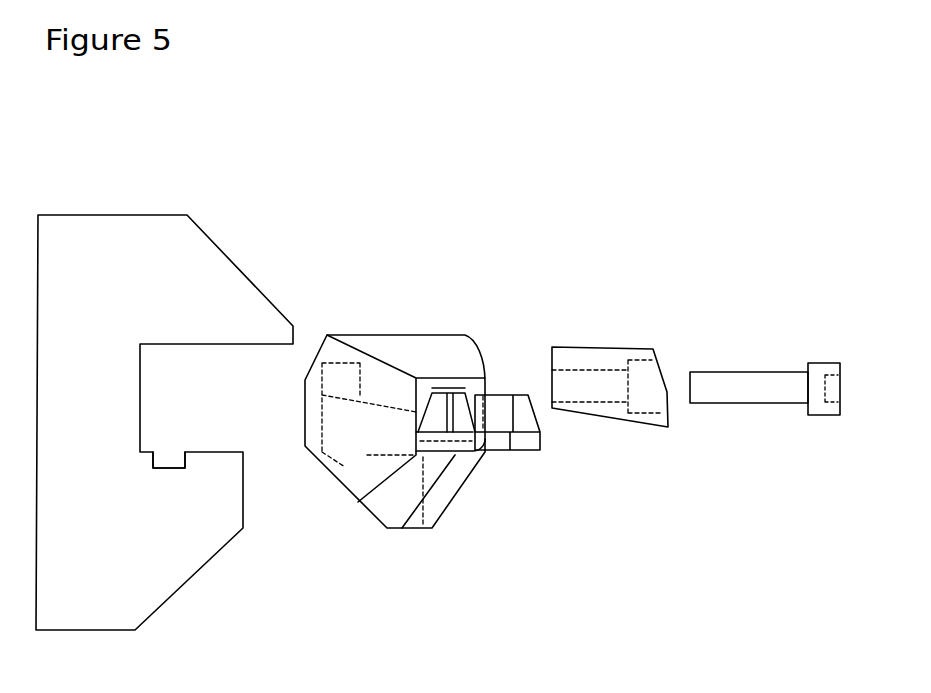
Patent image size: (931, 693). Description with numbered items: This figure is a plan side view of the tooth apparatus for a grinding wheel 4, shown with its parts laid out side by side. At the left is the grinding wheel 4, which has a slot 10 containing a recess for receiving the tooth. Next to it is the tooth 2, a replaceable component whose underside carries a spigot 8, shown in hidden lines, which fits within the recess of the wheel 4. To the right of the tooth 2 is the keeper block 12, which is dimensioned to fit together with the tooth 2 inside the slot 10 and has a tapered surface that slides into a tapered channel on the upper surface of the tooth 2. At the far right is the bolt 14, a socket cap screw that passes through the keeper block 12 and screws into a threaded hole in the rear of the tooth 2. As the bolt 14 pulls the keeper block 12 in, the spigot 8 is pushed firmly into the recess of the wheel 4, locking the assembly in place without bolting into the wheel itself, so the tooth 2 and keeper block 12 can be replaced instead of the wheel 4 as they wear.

The tooth 2 is at (458, 490).
The grinding wheel 4 is at (192, 577).
The spigot 8 is at (352, 467).
The slot 10 is at (167, 458).
The keeper block 12 is at (617, 418).
The bolt 14 is at (753, 405).